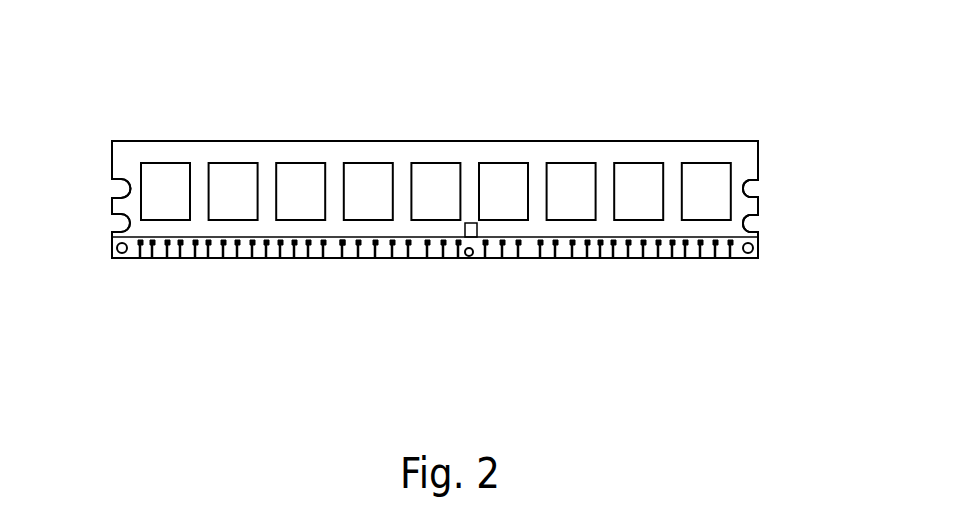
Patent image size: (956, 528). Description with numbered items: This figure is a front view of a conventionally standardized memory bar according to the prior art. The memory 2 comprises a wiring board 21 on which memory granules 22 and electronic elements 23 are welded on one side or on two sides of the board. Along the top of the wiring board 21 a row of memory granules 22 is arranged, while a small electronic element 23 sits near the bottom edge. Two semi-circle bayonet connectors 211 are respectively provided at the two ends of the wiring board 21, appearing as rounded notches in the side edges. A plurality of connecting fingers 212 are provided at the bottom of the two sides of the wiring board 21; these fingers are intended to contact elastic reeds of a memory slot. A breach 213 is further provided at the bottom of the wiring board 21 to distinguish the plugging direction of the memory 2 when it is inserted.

The memory 2 is at (566, 112).
The wiring board 21 is at (165, 224).
The semi-circle bayonet connector 211 is at (753, 188).
The connecting finger 212 is at (274, 245).
The breach 213 is at (469, 257).
The memory granule 22 is at (232, 198).
The electronic element 23 is at (408, 295).